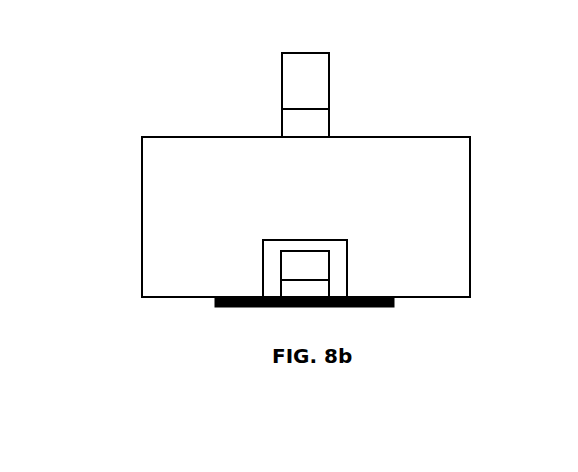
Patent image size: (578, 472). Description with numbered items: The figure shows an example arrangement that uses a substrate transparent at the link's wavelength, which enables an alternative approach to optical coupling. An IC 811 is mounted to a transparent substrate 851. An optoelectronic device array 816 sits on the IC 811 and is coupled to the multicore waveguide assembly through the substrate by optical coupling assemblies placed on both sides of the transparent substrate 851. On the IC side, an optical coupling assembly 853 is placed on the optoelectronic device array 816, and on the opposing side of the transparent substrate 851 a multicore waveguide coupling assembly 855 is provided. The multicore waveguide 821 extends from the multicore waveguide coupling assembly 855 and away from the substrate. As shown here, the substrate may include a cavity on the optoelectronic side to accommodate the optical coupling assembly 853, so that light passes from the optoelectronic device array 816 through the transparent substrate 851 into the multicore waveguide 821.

The IC 811 is at (228, 296).
The optoelectronic device array 816 is at (329, 283).
The multicore waveguide 821 is at (282, 77).
The transparent substrate 851 is at (142, 242).
The optical coupling assembly 853 is at (282, 262).
The multicore waveguide coupling assembly 855 is at (282, 120).